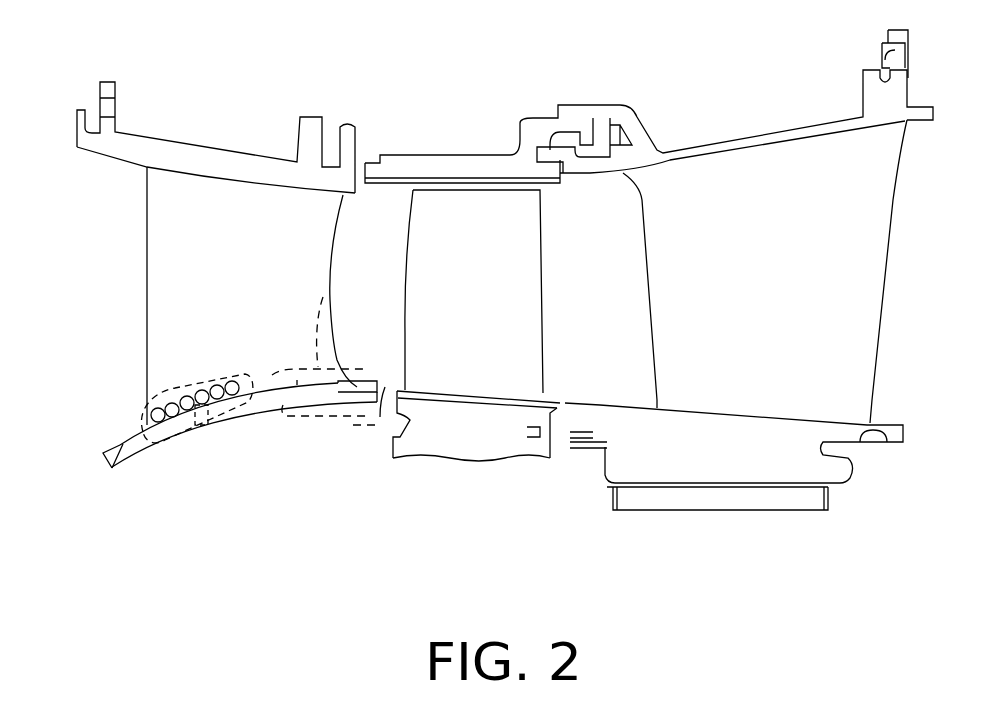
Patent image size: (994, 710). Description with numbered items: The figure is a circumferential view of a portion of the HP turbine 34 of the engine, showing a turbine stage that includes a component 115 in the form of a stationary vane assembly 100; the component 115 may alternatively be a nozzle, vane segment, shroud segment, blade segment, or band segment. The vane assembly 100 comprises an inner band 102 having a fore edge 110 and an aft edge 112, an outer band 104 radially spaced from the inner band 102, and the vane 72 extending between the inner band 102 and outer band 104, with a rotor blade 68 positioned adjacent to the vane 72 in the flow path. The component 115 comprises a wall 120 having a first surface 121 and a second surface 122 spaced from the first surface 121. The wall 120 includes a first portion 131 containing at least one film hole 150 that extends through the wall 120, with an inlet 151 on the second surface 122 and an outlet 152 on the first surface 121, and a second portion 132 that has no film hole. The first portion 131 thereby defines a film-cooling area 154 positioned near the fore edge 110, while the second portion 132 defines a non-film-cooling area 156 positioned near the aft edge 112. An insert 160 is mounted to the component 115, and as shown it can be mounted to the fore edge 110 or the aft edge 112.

The HP turbine 34 is at (173, 63).
The outer band 104 is at (152, 153).
The vane 72 is at (257, 242).
The rotor blade 68 is at (483, 285).
The stationary vane assembly 100 is at (284, 500).
The inner band 102 is at (127, 462).
The wall 120 is at (240, 430).
The fore edge 110 is at (107, 460).
The aft edge 112 is at (386, 388).
The component 115 is at (355, 473).
The first surface 121 is at (297, 385).
The second surface 122 is at (280, 410).
The first portion 131 is at (187, 387).
The film-cooling area 154 is at (195, 401).
The second portion 132 is at (323, 297).
The non-film-cooling area 156 is at (317, 372).
The film hole 150 is at (221, 362).
The inlet 151 is at (207, 425).
The outlet 152 is at (203, 390).
The insert 160 is at (97, 437).